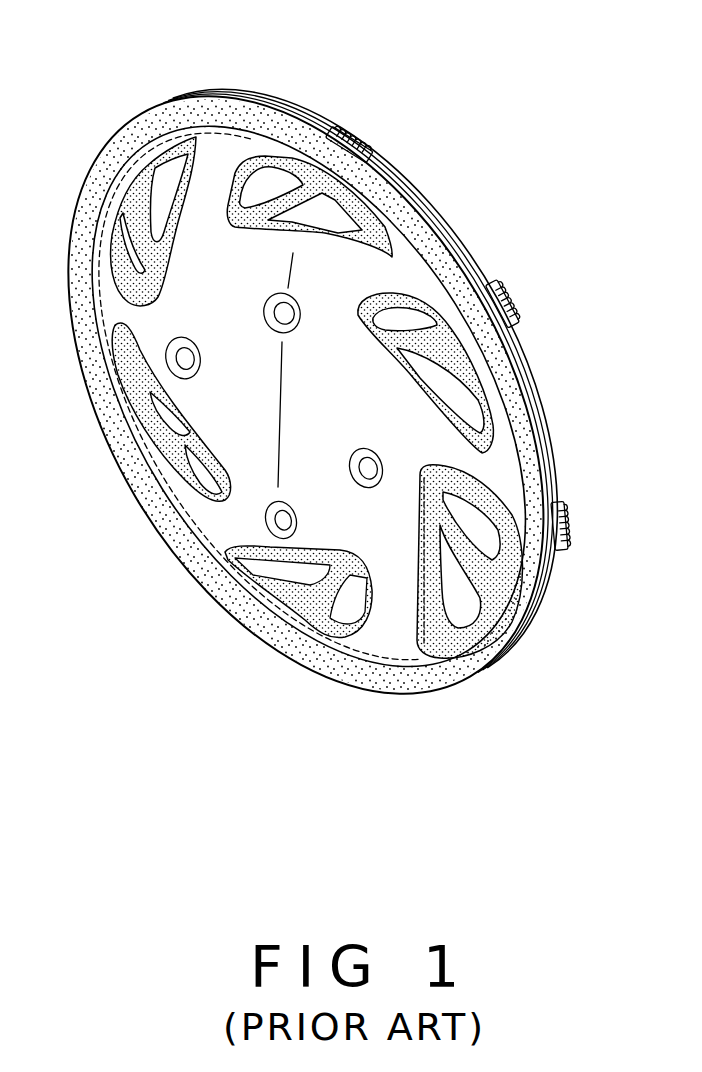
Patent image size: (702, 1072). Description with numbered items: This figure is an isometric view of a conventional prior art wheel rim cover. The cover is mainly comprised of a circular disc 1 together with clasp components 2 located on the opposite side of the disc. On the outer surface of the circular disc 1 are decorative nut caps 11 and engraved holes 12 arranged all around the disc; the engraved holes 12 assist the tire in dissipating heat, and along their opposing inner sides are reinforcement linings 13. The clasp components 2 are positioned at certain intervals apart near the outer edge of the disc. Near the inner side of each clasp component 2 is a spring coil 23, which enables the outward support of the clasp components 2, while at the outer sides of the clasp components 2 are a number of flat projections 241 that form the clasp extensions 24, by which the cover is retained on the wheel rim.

The circular disc 1 is at (212, 163).
The clasp components 2 is at (388, 380).
The decorative nut caps 11 is at (180, 362).
The engraved holes 12 is at (264, 642).
The reinforcement linings 13 is at (343, 627).
The spring coil 23 is at (437, 217).
The clasp extensions 24 is at (466, 337).
The flat projections 241 is at (494, 284).